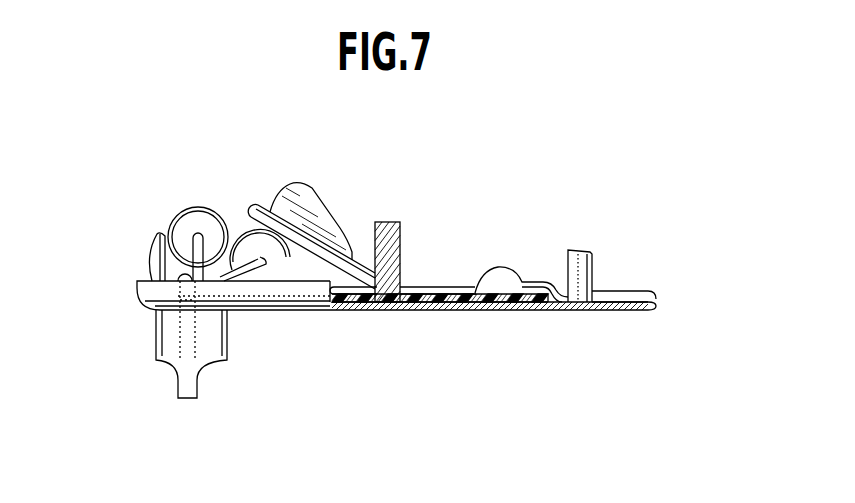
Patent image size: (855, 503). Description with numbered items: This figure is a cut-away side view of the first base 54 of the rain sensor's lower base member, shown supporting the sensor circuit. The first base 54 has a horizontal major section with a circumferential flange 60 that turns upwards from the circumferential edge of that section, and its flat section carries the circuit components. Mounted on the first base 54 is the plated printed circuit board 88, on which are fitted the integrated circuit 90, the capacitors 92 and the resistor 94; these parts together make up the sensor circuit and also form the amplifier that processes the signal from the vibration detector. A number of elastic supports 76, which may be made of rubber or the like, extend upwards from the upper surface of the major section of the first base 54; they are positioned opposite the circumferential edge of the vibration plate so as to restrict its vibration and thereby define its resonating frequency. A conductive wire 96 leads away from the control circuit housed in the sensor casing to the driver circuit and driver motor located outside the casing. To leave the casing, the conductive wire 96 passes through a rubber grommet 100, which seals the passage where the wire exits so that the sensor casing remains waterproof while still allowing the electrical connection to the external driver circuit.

The first base 54 is at (486, 311).
The circumferential flange 60 is at (147, 299).
The elastic supports 76 is at (387, 222).
The plated printed circuit board 88 is at (440, 286).
The integrated circuit 90 is at (314, 196).
The capacitors 92 is at (200, 218).
The resistor 94 is at (150, 258).
The conductive wire 96 is at (189, 399).
The rubber grommet 100 is at (217, 357).